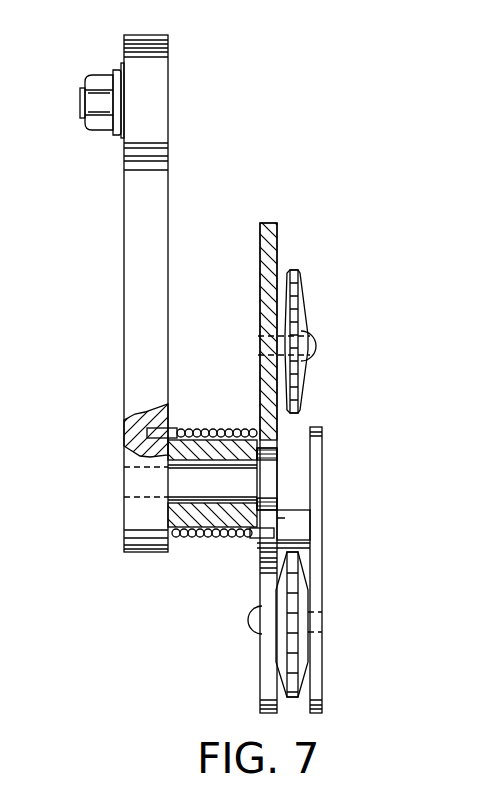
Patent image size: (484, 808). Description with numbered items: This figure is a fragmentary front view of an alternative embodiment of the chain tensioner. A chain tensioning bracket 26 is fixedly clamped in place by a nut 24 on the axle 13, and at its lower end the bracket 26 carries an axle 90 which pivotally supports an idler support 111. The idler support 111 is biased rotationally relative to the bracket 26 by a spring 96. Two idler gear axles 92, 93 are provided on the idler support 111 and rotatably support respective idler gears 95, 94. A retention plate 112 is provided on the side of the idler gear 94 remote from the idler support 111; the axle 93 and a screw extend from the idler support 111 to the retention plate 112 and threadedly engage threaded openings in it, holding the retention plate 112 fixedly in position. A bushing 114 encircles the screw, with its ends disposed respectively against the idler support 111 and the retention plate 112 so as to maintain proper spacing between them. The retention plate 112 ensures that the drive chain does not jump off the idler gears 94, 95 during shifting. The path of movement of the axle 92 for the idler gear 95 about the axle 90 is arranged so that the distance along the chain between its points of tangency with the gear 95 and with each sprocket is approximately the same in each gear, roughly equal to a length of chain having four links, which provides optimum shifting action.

The axle 13 is at (80, 101).
The nut 24 is at (100, 106).
The chain tensioning bracket 26 is at (138, 226).
The axle 90 is at (193, 482).
The idler gear axle 92 is at (320, 345).
The idler gear axle 93 is at (253, 623).
The idler gear 94 is at (297, 595).
The idler gear 95 is at (300, 305).
The spring 96 is at (198, 538).
The idler support 111 is at (263, 580).
The retention plate 112 is at (315, 488).
The bushing 114 is at (293, 525).